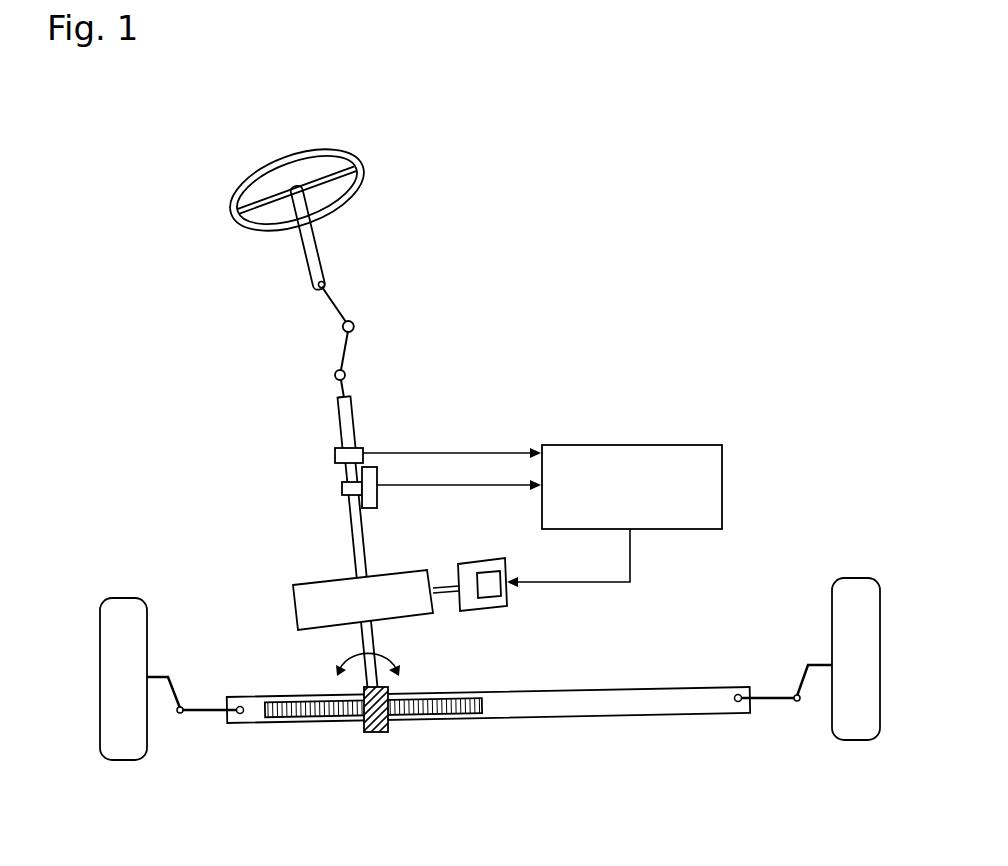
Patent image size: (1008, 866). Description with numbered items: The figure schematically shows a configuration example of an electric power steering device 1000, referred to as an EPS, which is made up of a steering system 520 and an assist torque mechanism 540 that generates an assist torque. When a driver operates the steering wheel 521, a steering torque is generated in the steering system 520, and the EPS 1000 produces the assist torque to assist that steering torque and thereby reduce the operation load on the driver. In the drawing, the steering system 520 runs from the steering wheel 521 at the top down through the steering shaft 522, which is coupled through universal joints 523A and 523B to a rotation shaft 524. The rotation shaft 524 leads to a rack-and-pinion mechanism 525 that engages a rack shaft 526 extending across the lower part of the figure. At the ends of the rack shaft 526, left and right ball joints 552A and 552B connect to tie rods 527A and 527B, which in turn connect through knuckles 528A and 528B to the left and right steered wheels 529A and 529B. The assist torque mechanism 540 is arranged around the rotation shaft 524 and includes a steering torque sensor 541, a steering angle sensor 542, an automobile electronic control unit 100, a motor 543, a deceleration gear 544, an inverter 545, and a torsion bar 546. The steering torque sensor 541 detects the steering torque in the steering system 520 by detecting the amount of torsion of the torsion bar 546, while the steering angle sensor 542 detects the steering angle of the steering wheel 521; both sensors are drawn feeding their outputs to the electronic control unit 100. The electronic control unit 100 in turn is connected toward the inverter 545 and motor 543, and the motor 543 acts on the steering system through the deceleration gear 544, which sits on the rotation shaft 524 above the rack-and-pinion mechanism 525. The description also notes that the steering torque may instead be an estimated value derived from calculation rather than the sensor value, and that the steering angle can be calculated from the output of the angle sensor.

The electric power steering device 1000 is at (531, 161).
The automobile electronic control unit 100 is at (680, 450).
The steering system 520 is at (304, 396).
The steering wheel 521 is at (248, 172).
The steering shaft 522 is at (320, 248).
The universal joint 523A is at (355, 323).
The universal joint 523B is at (350, 372).
The rotation shaft 524 is at (352, 425).
The rack-and-pinion mechanism 525 is at (390, 746).
The rack shaft 526 is at (532, 717).
The tie rod 527A is at (196, 703).
The tie rod 527B is at (785, 696).
The knuckle 528A is at (158, 673).
The knuckle 528B is at (813, 660).
The steered wheel 529A is at (128, 742).
The steered wheel 529B is at (848, 732).
The assist torque mechanism 540 is at (570, 411).
The steering torque sensor 541 is at (378, 499).
The steering angle sensor 542 is at (365, 451).
The motor 543 is at (480, 560).
The deceleration gear 544 is at (300, 583).
The inverter 545 is at (490, 592).
The torsion bar 546 is at (343, 485).
The ball joint 552A is at (240, 722).
The ball joint 552B is at (738, 707).